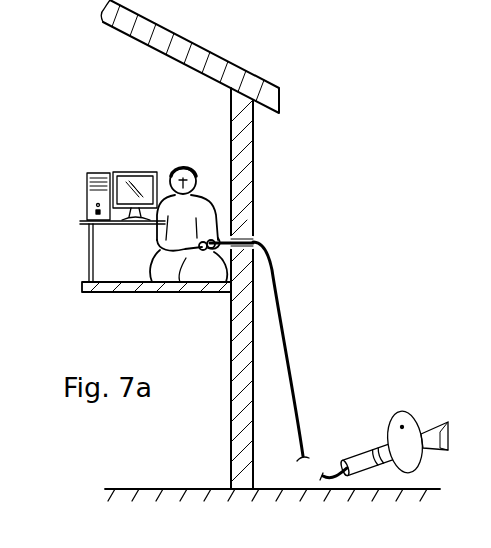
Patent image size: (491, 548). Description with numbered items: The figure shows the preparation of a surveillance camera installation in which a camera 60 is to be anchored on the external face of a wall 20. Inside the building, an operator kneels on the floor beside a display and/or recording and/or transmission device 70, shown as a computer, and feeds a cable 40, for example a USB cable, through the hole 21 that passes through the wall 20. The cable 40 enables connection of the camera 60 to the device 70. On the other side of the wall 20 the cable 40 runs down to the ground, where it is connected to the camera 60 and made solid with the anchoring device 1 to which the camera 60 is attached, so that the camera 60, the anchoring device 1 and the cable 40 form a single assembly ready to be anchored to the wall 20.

The anchoring device 1 is at (394, 414).
The wall 20 is at (254, 186).
The hole 21 is at (255, 241).
The cable 40 is at (283, 308).
The camera 60 is at (434, 415).
The display and/or recording and/or transmission device 70 is at (132, 172).